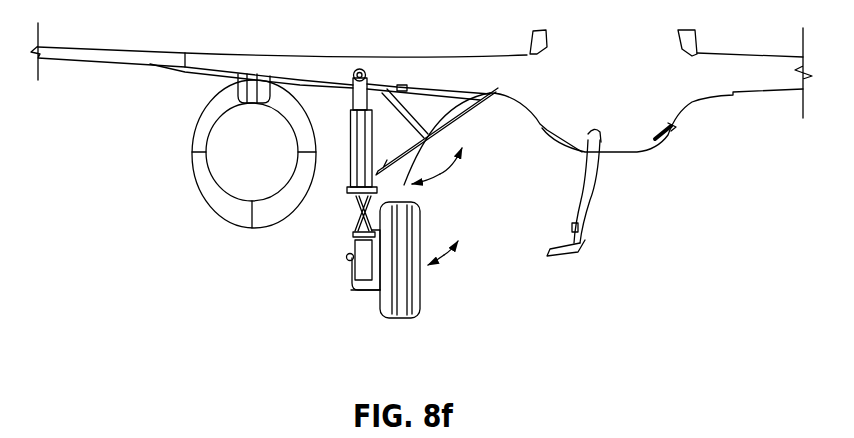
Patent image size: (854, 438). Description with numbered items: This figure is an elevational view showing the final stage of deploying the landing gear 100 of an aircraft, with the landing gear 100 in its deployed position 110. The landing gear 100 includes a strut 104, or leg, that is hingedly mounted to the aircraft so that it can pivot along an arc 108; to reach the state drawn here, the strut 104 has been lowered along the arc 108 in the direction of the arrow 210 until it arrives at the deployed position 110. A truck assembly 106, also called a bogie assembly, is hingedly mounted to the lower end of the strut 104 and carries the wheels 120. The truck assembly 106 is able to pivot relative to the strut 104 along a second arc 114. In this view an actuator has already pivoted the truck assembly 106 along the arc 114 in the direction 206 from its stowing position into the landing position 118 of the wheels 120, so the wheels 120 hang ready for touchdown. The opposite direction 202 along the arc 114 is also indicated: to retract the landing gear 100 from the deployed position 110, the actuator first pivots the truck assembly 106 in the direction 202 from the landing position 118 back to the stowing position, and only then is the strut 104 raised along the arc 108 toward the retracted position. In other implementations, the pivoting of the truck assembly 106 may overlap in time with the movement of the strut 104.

The landing gear 100 is at (378, 323).
The strut 104 is at (352, 150).
The truck assembly 106 is at (370, 298).
The arc 108 is at (450, 168).
The deployed position 110 is at (336, 194).
The arc 114 is at (447, 258).
The landing position 118 is at (424, 290).
The wheels 120 is at (398, 318).
The direction 202 is at (426, 268).
The direction 206 is at (452, 243).
The arrow 210 is at (490, 95).